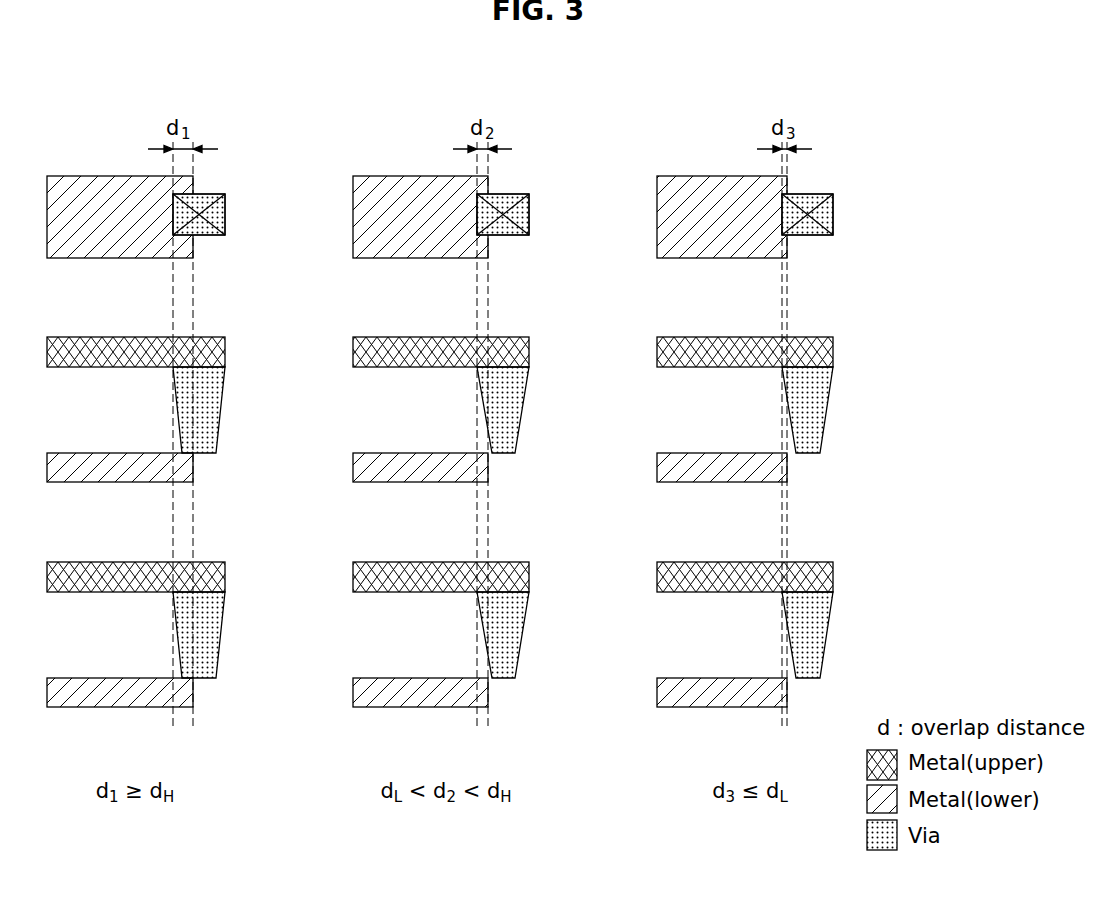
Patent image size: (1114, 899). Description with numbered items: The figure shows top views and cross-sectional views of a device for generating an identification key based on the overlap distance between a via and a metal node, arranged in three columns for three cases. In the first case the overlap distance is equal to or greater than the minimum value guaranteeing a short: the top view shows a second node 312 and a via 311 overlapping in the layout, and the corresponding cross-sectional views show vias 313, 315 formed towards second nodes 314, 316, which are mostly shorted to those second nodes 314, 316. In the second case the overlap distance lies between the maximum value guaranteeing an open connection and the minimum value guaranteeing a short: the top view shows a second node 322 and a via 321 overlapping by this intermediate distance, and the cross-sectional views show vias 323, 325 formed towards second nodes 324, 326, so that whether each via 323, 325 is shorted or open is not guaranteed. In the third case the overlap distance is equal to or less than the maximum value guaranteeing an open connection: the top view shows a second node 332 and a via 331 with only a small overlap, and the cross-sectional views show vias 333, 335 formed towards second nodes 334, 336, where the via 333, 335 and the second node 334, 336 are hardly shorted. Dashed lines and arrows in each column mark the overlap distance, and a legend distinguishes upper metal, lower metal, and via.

The via 311 is at (215, 235).
The second node 312 is at (93, 258).
The via 313 is at (210, 453).
The second node 314 is at (93, 482).
The via 315 is at (210, 678).
The second node 316 is at (93, 707).
The via 321 is at (516, 235).
The second node 322 is at (396, 258).
The via 323 is at (510, 453).
The second node 324 is at (396, 482).
The via 325 is at (510, 678).
The second node 326 is at (396, 707).
The via 331 is at (819, 235).
The second node 332 is at (699, 258).
The via 333 is at (814, 453).
The second node 334 is at (700, 482).
The via 335 is at (814, 678).
The second node 336 is at (700, 707).